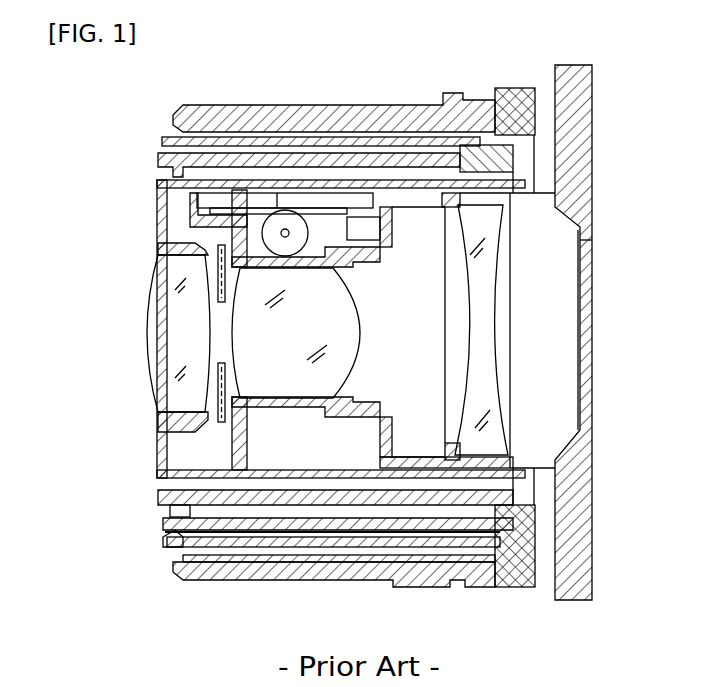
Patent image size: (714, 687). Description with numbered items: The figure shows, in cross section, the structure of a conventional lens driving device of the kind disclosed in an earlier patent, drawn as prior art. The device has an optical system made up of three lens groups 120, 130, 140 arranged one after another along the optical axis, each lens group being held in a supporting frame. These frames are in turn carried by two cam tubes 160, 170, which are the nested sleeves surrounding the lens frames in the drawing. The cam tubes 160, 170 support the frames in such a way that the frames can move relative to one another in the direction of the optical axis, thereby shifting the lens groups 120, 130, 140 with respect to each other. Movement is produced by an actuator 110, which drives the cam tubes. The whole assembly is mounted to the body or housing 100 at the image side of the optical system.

The lens module housing (mount plate) 100 is at (483, 207).
The actuator 110 is at (205, 241).
The lens group 120 is at (167, 377).
The lens group 130 is at (250, 318).
The lens group 140 is at (487, 373).
The cam tube 160 is at (172, 508).
The cam tube 170 is at (165, 538).